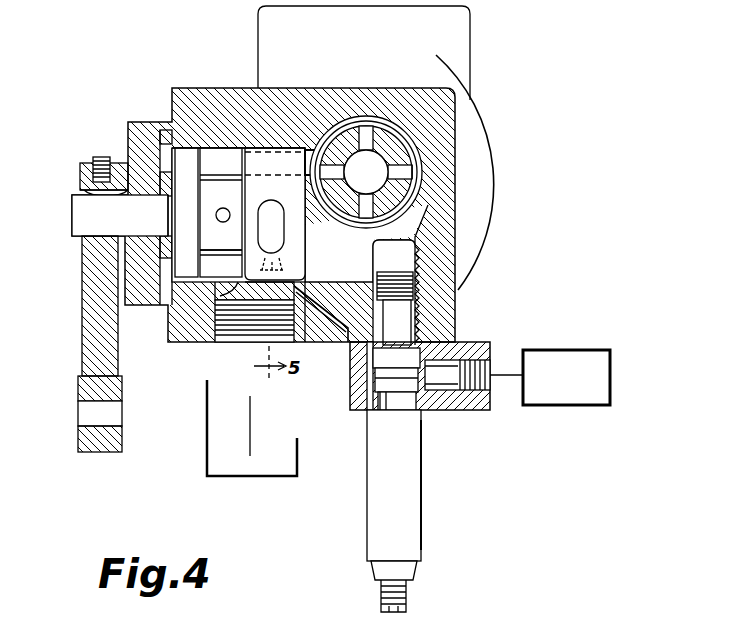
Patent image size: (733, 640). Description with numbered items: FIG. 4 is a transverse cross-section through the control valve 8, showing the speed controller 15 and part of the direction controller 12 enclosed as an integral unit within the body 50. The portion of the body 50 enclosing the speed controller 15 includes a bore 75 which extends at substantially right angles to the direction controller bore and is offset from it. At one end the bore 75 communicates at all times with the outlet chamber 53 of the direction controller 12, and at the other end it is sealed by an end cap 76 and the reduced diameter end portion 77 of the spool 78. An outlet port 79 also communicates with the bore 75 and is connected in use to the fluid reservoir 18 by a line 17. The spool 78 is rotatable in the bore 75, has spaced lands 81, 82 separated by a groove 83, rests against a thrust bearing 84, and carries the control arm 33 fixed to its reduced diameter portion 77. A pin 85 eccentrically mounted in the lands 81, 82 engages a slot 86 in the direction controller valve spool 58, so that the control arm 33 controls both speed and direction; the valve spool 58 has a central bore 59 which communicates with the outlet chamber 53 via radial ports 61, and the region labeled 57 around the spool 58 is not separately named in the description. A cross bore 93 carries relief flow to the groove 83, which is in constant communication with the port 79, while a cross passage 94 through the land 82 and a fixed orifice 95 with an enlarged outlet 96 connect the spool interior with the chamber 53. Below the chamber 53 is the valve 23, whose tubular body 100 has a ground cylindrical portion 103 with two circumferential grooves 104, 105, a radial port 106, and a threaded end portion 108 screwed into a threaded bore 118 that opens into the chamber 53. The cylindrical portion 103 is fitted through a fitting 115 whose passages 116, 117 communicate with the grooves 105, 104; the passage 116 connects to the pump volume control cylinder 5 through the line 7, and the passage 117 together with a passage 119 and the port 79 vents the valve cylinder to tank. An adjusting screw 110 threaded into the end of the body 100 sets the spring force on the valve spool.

The hydraulic cylinder 5 is at (565, 350).
The line 7 is at (512, 378).
The control valve 8 is at (488, 46).
The direction controller 12 is at (474, 82).
The speed controller 15 is at (116, 126).
The line 17 is at (250, 414).
The fluid reservoir 18 is at (288, 486).
The valve 23 is at (434, 511).
The control arm 33 is at (82, 336).
The body 50 is at (364, 53).
The outlet chamber 53 is at (415, 217).
The bearing 57 is at (378, 114).
The valve spool 58 is at (415, 146).
The central bore 59 is at (392, 135).
The radial ports 61 is at (384, 176).
The bore 75 is at (270, 148).
The end cap 76 is at (143, 130).
The reduced diameter end portion 77 is at (76, 222).
The spool 78 is at (158, 224).
The outlet port 79 is at (242, 320).
The land 81 is at (193, 204).
The land 82 is at (300, 267).
The groove 83 is at (251, 264).
The thrust bearing 84 is at (120, 215).
The pin 85 is at (305, 165).
The slot 86 is at (345, 212).
The cross bore 93 is at (220, 222).
The cross passage 94 is at (283, 205).
The fixed orifice 95 is at (272, 280).
The enlarged outlet 96 is at (240, 290).
The tubular body 100 is at (415, 489).
The ground cylindrical portion 103 is at (438, 412).
The circumferential groove 104 is at (393, 418).
The circumferential groove 105 is at (398, 332).
The radial port 106 is at (372, 418).
The threaded end portion 108 is at (418, 284).
The adjusting screw 110 is at (408, 598).
The fitting 115 is at (490, 408).
The passage 116 is at (495, 358).
The passage 117 is at (364, 388).
The threaded bore 118 is at (405, 250).
The passage 119 is at (318, 322).